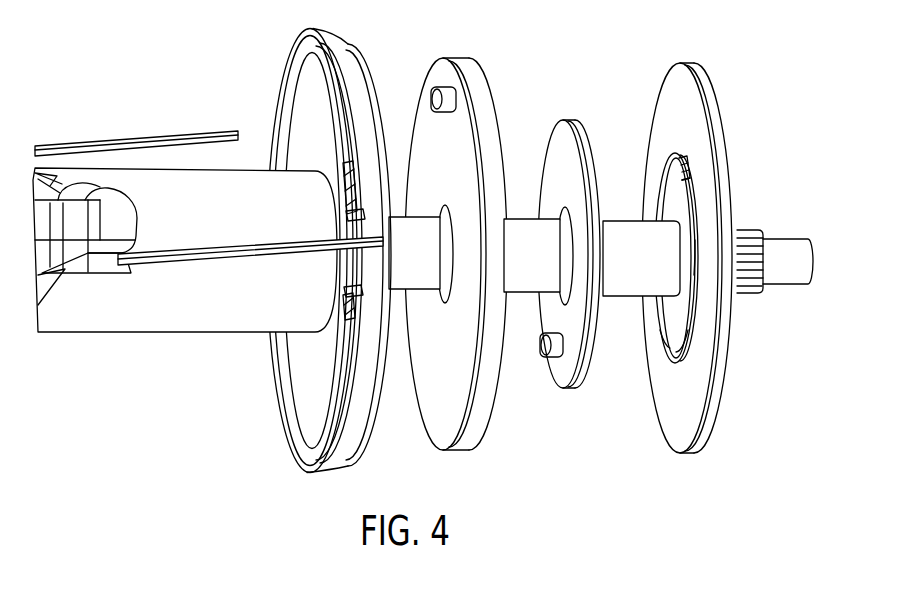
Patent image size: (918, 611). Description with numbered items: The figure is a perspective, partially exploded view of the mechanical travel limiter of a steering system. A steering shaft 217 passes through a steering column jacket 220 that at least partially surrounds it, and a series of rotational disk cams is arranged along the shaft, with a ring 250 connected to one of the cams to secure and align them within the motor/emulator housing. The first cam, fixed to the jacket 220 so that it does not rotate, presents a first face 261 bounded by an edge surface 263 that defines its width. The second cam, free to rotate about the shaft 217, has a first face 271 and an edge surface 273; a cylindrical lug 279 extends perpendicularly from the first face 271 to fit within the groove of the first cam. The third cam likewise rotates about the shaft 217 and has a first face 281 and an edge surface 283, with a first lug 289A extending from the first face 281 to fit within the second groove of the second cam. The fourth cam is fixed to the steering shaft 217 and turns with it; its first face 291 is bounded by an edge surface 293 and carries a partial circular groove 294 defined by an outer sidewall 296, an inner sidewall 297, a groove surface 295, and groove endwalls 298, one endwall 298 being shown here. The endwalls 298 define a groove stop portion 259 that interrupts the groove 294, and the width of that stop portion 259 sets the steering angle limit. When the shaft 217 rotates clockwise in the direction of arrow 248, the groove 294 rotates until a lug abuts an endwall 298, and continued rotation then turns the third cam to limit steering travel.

The steering column jacket 220 is at (163, 193).
The ring 250 is at (313, 31).
The first face 261 is at (318, 110).
The edge surface 263 is at (357, 72).
The first face 271 is at (445, 388).
The edge surface 273 is at (472, 88).
The lug 279 is at (440, 90).
The first face 281 is at (562, 160).
The edge surface 283 is at (581, 389).
The first lug 289A is at (553, 357).
The first face 291 is at (673, 128).
The edge surface 293 is at (710, 70).
The outer sidewall 296 is at (668, 200).
The groove stop portion 259 is at (688, 172).
The groove endwall 298 is at (690, 182).
The inner sidewall 297 is at (693, 252).
The groove 294 is at (667, 330).
The groove surface 295 is at (680, 338).
The steering shaft 217 is at (790, 239).
The arrow 248 is at (826, 294).